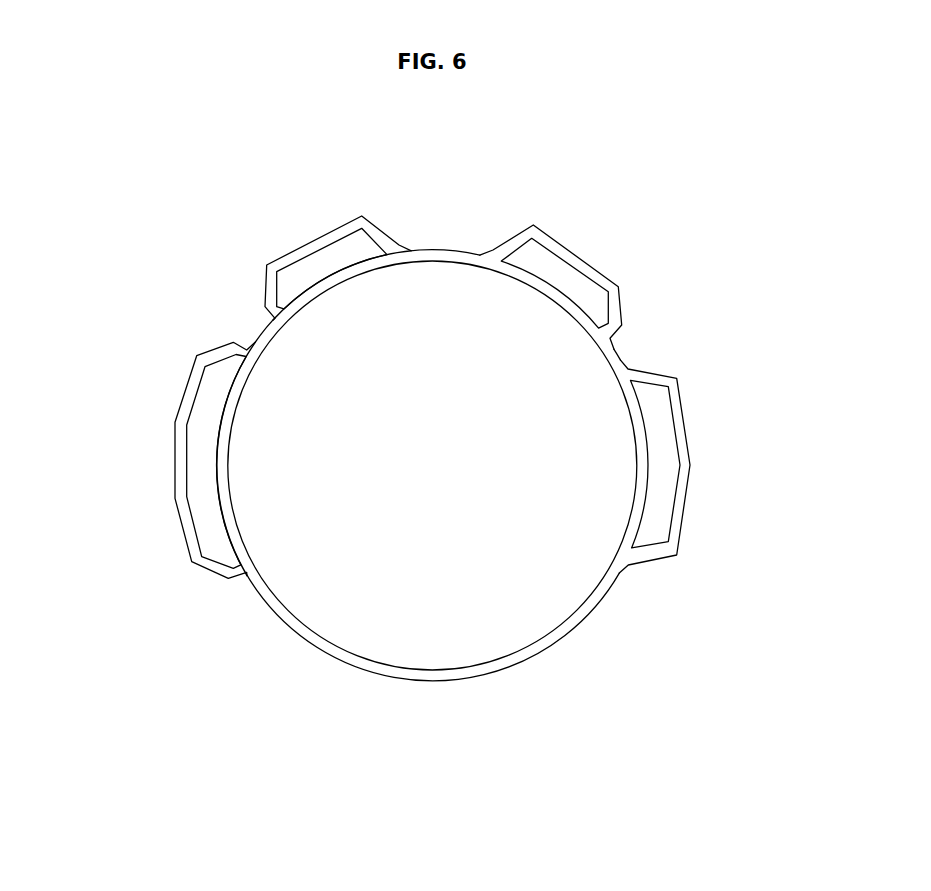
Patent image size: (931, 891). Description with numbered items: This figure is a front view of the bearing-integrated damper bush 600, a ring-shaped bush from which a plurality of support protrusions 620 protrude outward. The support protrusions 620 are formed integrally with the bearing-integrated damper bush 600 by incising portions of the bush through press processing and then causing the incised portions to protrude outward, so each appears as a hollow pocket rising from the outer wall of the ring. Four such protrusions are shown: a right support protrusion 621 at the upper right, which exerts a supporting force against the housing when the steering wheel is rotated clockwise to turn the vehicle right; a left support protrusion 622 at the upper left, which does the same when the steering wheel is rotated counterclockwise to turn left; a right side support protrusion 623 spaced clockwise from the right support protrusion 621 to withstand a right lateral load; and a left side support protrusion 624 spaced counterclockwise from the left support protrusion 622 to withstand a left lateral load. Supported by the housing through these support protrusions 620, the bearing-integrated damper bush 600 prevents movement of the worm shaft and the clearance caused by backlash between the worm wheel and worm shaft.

The bearing-integrated damper bush 600 is at (304, 652).
The support protrusions 620 is at (546, 222).
The right support protrusion 621 is at (587, 267).
The left support protrusion 622 is at (313, 239).
The right side support protrusion 623 is at (691, 431).
The left side support protrusion 624 is at (180, 462).